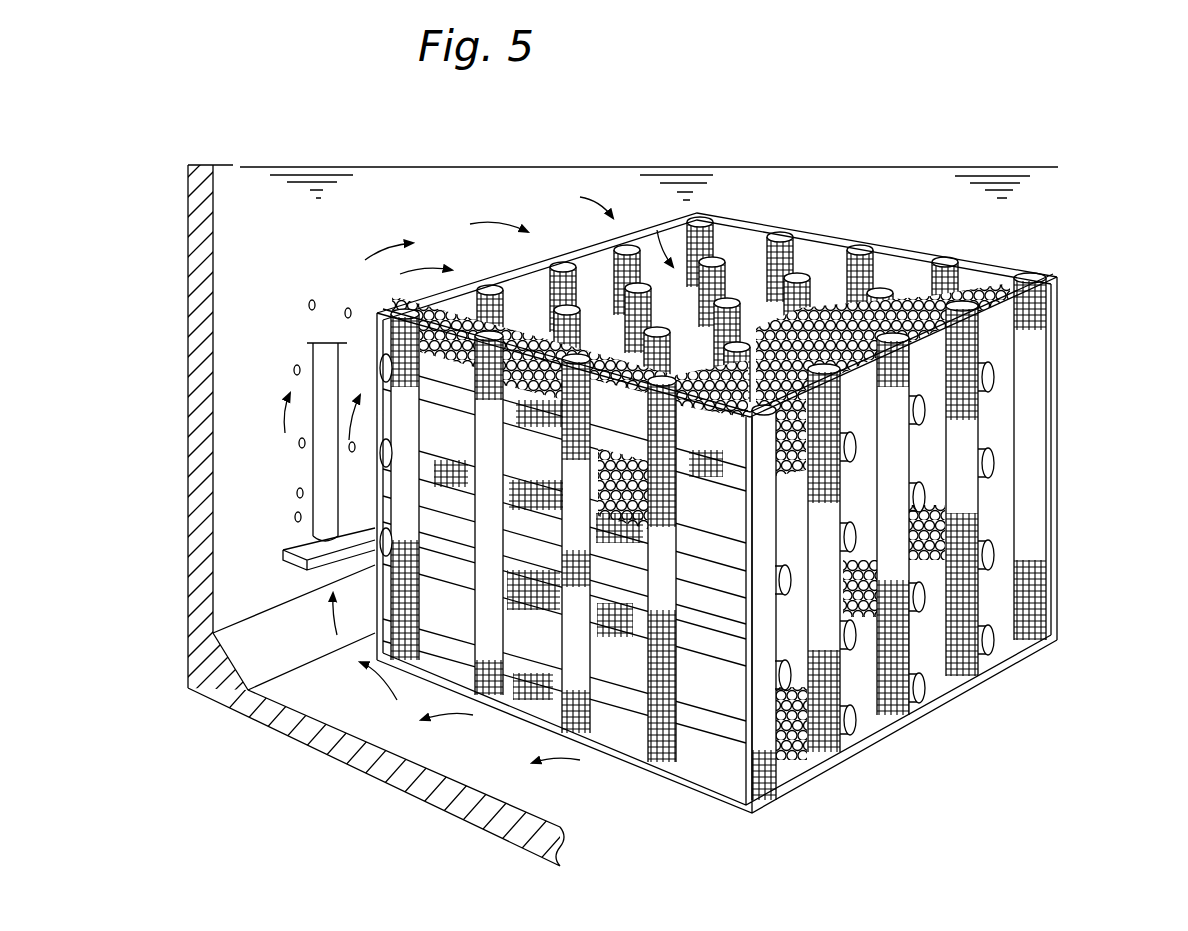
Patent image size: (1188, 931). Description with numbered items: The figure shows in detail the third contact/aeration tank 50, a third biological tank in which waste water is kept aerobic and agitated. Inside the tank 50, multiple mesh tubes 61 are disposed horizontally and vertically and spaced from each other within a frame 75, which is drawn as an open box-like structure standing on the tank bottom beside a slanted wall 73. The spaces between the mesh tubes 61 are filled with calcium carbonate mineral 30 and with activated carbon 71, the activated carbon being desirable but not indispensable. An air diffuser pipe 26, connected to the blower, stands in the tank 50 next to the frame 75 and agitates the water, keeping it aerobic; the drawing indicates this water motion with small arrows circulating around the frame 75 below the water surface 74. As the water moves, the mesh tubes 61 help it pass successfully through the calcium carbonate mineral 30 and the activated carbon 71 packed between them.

The air diffuser pipe 26 is at (313, 540).
The calcium carbonate mineral 30 is at (523, 322).
The third contact/aeration tank 50 is at (372, 778).
The mesh tubes 61 is at (400, 417).
The activated carbon 71 is at (530, 320).
The slanted wall 73 is at (263, 662).
The water surface 74 is at (1015, 168).
The frame 75 is at (820, 777).